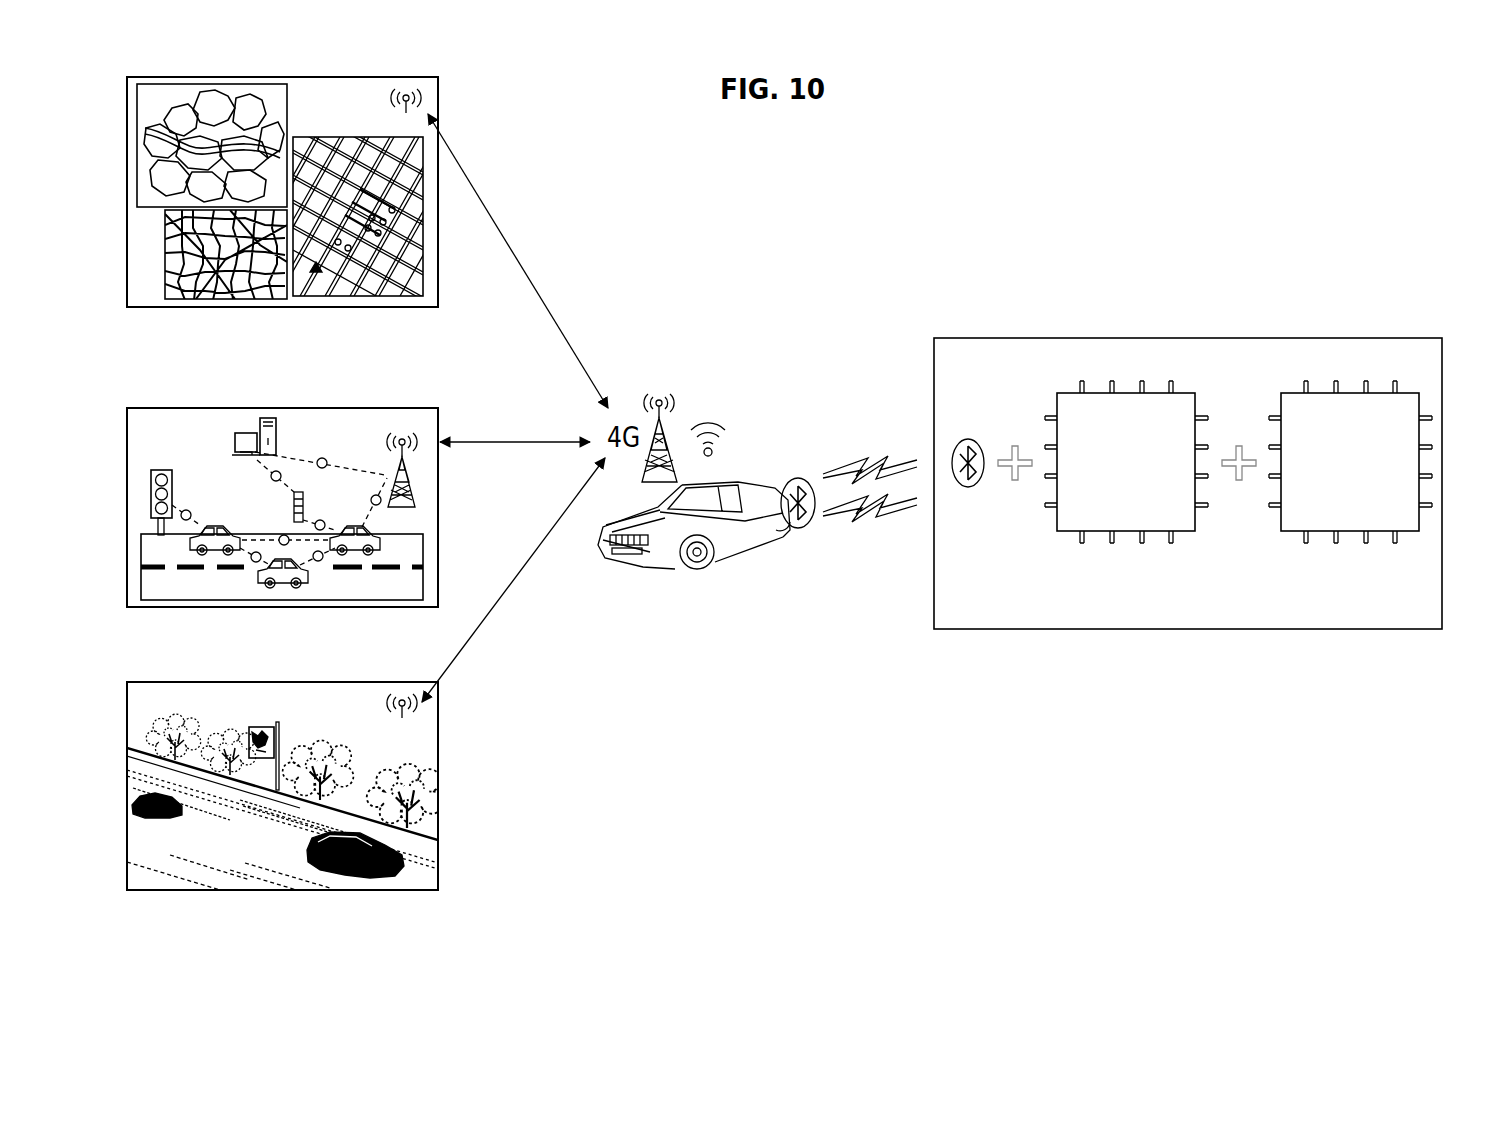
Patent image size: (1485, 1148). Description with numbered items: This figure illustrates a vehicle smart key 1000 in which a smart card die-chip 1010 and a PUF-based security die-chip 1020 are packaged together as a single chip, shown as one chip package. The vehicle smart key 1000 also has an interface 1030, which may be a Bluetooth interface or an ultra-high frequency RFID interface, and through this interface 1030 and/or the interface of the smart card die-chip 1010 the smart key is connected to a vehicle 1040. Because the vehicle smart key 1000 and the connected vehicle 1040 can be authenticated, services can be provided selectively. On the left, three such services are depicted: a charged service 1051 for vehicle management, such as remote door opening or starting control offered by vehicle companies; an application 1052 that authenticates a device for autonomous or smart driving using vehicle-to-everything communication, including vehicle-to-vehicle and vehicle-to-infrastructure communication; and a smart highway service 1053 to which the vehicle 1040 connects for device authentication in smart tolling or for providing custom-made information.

The vehicle smart key 1000 is at (1188, 423).
The smart card die-chip 1010 is at (1124, 393).
The PUF-based security die-chip 1020 is at (1348, 393).
The interface 1030 is at (968, 439).
The vehicle 1040 is at (767, 483).
The charged service 1051 is at (438, 103).
The application 1052 is at (438, 470).
The smart highway service 1053 is at (438, 852).